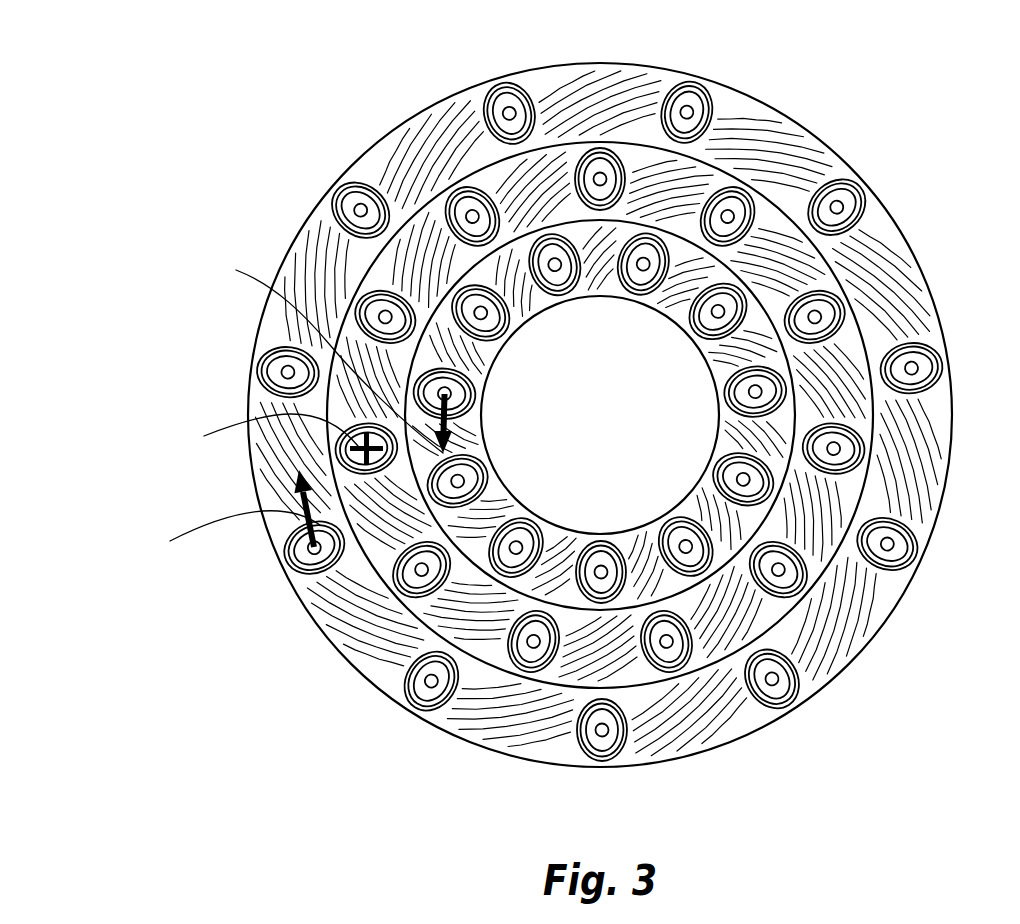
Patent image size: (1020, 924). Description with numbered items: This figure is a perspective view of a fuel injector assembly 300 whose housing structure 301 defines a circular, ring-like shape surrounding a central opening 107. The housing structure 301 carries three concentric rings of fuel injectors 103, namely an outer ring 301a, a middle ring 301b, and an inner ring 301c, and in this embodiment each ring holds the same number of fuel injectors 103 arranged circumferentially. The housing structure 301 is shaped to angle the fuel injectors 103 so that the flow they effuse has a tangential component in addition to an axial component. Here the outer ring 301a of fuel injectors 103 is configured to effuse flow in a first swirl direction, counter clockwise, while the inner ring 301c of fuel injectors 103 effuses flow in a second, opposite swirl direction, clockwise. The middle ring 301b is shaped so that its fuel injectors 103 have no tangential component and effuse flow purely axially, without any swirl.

The fuel injector assembly 300 is at (213, 187).
The housing structure 301 is at (434, 106).
The outer ring 301a is at (598, 110).
The middle ring 301b is at (663, 190).
The inner ring 301c is at (685, 412).
The fuel injectors 103 is at (458, 389).
The central opening 107 is at (612, 476).